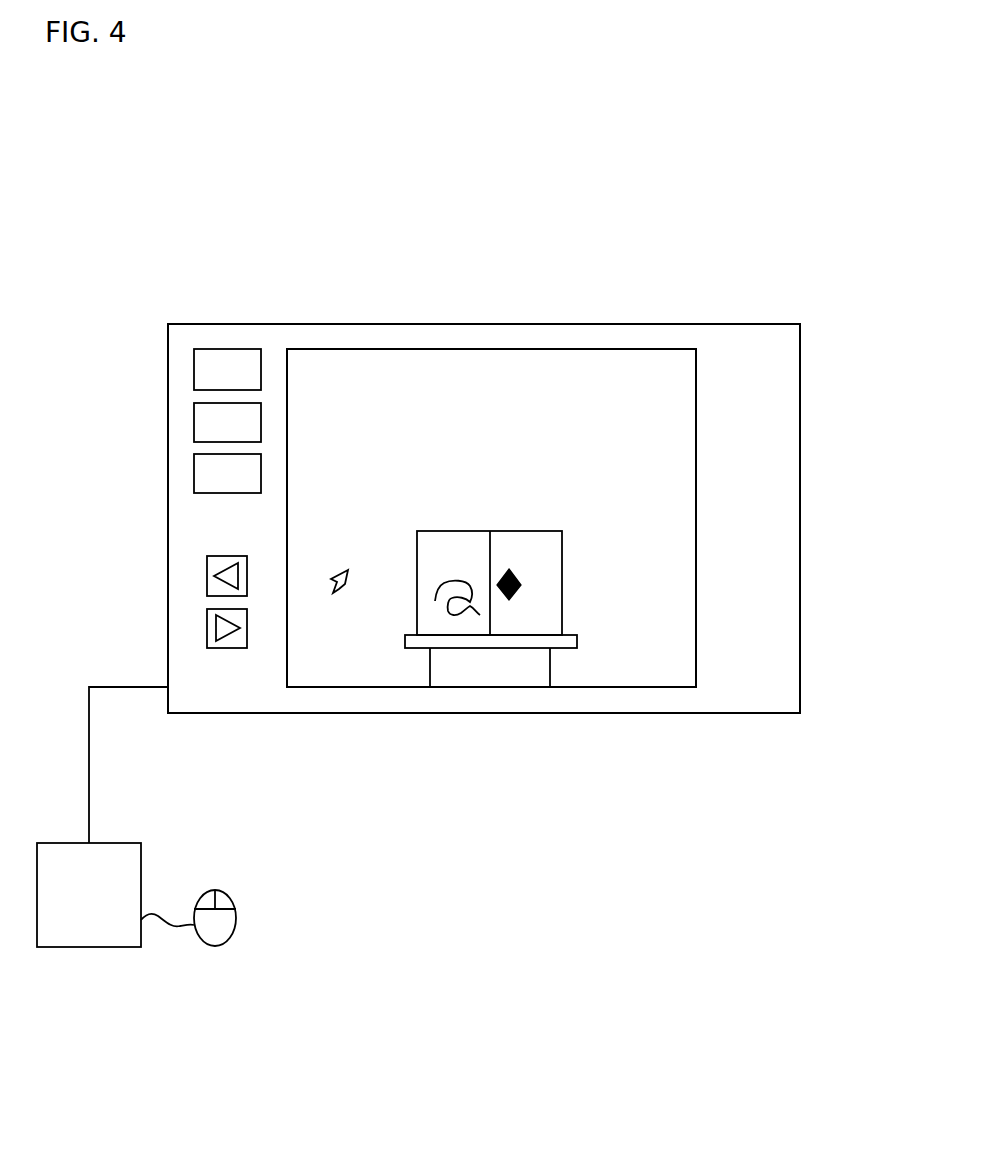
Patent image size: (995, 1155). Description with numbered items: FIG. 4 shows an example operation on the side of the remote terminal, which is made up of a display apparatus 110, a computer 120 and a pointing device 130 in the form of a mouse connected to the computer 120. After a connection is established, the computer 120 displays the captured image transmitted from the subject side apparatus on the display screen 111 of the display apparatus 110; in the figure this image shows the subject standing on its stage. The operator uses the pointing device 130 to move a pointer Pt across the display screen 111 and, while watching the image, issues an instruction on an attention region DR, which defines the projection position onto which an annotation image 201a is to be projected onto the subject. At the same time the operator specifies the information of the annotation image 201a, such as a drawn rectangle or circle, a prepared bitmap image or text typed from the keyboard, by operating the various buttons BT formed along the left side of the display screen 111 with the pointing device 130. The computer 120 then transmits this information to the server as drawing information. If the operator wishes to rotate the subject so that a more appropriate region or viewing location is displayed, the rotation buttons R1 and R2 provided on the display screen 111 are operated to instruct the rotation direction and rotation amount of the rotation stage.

The display apparatus 110 is at (757, 322).
The display screen 111 is at (790, 443).
The buttons BT is at (193, 372).
The rotation button R1 is at (207, 577).
The rotation button R2 is at (207, 628).
The pointer Pt is at (340, 596).
The annotation image 201a is at (457, 622).
The attention region DR is at (511, 600).
The computer 120 is at (124, 843).
The pointing device 130 is at (227, 893).